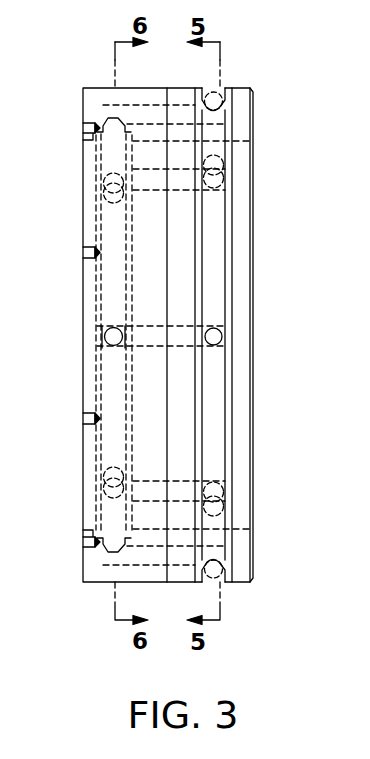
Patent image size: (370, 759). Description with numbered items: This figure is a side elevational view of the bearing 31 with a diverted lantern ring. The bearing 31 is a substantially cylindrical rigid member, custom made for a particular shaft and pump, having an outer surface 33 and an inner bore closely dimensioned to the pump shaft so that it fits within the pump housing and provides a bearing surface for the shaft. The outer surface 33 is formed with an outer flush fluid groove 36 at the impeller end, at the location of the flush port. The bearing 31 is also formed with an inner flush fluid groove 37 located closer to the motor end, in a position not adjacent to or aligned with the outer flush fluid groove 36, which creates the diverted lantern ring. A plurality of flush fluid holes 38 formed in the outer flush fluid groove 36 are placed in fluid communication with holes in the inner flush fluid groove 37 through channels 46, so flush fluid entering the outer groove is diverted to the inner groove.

The bearing 31 is at (218, 98).
The outer surface 33 is at (104, 583).
The outer flush fluid groove 36 is at (217, 577).
The inner flush fluid groove 37 is at (118, 372).
The flush fluid holes 38 is at (217, 343).
The channels 46 is at (148, 332).